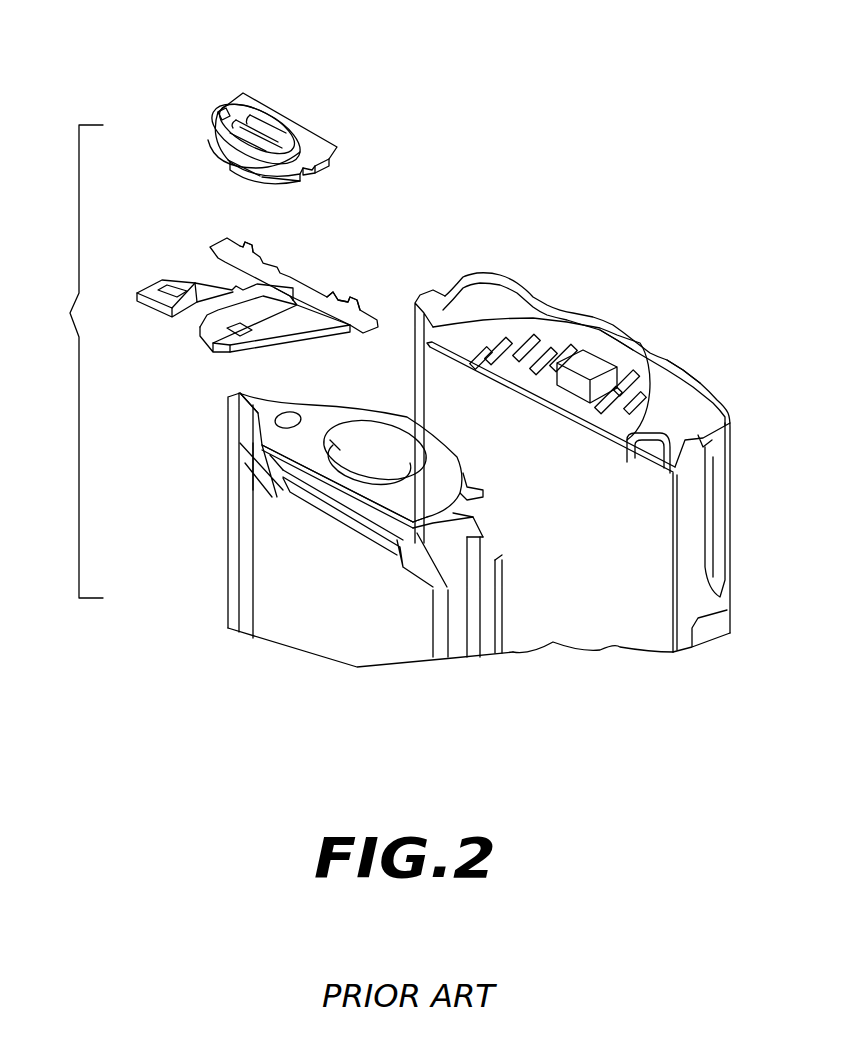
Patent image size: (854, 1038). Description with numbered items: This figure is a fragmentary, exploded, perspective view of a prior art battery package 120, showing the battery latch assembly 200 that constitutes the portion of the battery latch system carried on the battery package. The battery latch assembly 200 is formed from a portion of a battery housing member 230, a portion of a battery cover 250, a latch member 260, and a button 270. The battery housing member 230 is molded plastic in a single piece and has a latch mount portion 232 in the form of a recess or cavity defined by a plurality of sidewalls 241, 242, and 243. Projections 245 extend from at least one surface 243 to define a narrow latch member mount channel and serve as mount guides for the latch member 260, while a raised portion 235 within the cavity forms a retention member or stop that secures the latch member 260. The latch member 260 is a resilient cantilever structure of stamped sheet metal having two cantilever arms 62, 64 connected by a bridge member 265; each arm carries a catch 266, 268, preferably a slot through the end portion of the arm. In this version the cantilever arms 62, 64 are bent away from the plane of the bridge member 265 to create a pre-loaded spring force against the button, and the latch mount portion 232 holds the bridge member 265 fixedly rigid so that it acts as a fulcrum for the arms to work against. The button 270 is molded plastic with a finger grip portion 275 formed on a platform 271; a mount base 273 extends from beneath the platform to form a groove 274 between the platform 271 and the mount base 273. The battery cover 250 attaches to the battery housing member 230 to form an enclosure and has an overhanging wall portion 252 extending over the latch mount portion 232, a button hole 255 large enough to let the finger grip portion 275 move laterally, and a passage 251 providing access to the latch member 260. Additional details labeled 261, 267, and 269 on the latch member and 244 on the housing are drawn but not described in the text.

The battery latch assembly 200 is at (61, 361).
The button 270 is at (393, 108).
The finger grip portion 275 is at (222, 110).
The platform 271 is at (263, 107).
The groove 274 is at (255, 171).
The mount base 273 is at (280, 180).
The latch member 260 is at (193, 363).
The cantilever arm 62 is at (192, 273).
The contact notch 261 is at (249, 240).
The bridge member 265 is at (300, 287).
The contact arm crossing portion 267 is at (287, 292).
The catch 266 is at (162, 282).
The catch 268 is at (163, 310).
The lower mounting pad 269 is at (267, 308).
The cantilever arm 64 is at (318, 338).
The battery cover 250 is at (213, 442).
The battery package 120 is at (382, 705).
The overhanging wall portion 252 is at (355, 395).
The button hole 255 is at (355, 452).
The passage 251 is at (300, 477).
The battery housing member 230 is at (820, 458).
The latch mount portion 232 is at (685, 378).
The sidewall 241 is at (503, 348).
The sidewall 242 is at (486, 352).
The contact rib 244 is at (473, 357).
The projections 245 is at (577, 335).
The raised portion 235 is at (607, 340).
The sidewall 243 is at (620, 350).